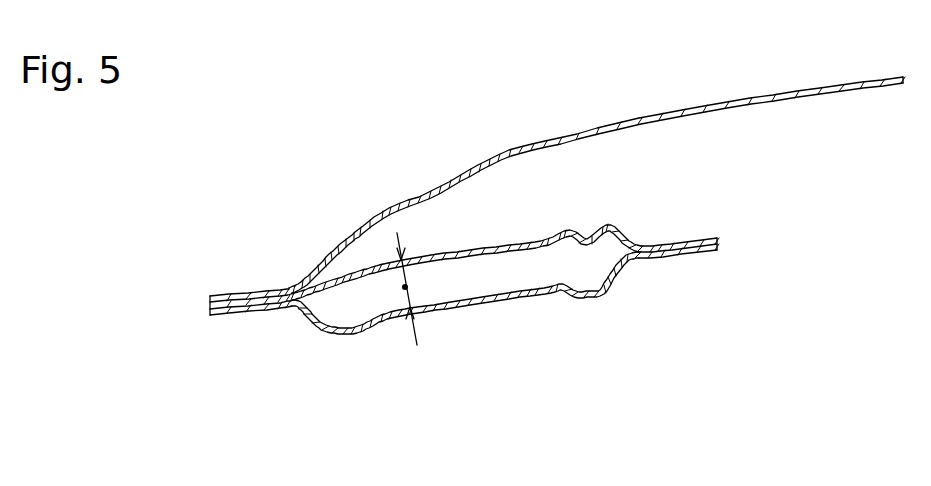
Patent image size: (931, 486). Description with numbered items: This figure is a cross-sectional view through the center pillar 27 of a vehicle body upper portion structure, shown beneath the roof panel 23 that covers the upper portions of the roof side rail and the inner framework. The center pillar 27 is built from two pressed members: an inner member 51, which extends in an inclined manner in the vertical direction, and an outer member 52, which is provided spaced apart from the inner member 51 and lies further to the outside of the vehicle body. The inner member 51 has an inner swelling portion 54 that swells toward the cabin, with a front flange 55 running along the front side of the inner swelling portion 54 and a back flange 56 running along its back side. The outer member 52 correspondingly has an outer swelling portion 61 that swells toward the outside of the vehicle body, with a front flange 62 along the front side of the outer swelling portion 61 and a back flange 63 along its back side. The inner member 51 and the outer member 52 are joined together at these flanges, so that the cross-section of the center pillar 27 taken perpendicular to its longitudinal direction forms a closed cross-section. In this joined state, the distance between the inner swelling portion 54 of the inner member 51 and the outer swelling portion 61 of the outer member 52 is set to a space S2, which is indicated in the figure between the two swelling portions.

The roof panel 23 is at (597, 127).
The center pillar 27 is at (558, 403).
The inner member 51 is at (528, 292).
The outer member 52 is at (443, 262).
The inner swelling portion 54 is at (563, 293).
The front flange 55 is at (700, 252).
The back flange 56 is at (258, 315).
The outer swelling portion 61 is at (485, 247).
The front flange 62 is at (675, 241).
The back flange 63 is at (241, 294).
The space S2 is at (403, 288).